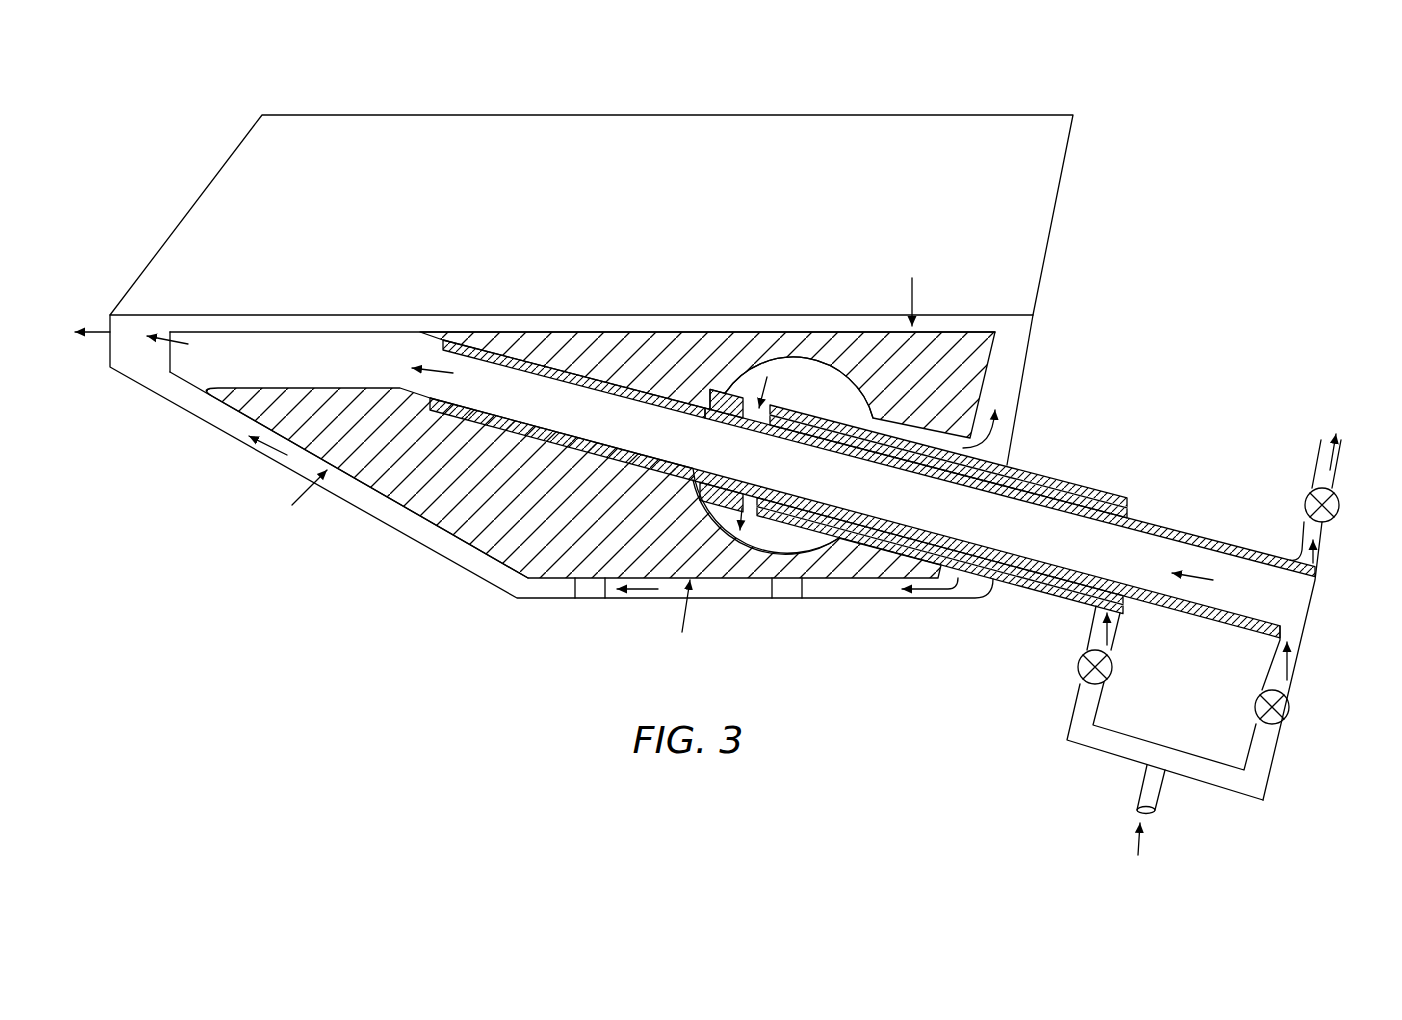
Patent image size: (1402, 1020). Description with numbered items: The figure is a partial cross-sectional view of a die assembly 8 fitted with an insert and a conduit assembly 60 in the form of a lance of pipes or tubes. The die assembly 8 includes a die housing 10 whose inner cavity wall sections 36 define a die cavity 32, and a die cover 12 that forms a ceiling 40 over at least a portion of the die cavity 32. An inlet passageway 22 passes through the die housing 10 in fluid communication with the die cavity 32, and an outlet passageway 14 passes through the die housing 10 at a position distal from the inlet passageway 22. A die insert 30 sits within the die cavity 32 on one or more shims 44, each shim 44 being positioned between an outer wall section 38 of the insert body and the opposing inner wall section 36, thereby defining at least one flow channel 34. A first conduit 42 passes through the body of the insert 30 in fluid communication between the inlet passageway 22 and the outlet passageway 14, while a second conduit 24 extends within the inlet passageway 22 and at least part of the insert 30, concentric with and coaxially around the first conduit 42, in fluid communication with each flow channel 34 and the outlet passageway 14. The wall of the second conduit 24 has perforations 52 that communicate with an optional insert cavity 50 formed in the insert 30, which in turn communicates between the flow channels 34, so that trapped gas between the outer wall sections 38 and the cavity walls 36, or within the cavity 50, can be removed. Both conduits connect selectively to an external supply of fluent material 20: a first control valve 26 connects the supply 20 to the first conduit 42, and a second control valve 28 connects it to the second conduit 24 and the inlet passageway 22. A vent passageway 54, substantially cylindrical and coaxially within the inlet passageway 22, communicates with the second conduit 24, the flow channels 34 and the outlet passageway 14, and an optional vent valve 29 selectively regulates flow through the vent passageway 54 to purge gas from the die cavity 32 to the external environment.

The die assembly 8 is at (166, 118).
The die housing 10 is at (200, 420).
The die cover 12 is at (375, 113).
The outlet passageway 14 is at (115, 323).
The external supply of fluent material 20 is at (1160, 798).
The inlet passageway 22 is at (1093, 488).
The second conduit 24 is at (1208, 532).
The first control valve 26 is at (1288, 720).
The second control valve 28 is at (1080, 667).
The vent valve 29 is at (1308, 497).
The die insert 30 is at (420, 334).
The die cavity 32 is at (160, 365).
The flow channel 34 is at (400, 523).
The inner cavity wall section 36 is at (248, 447).
The outer wall section 38 is at (593, 453).
The ceiling 40 is at (967, 318).
The first conduit 42 is at (578, 385).
The shim 44 is at (590, 600).
The insert cavity 50 is at (798, 372).
The perforation 52 is at (752, 400).
The vent passageway 54 is at (1320, 568).
The conduit assembly 60 is at (1212, 427).